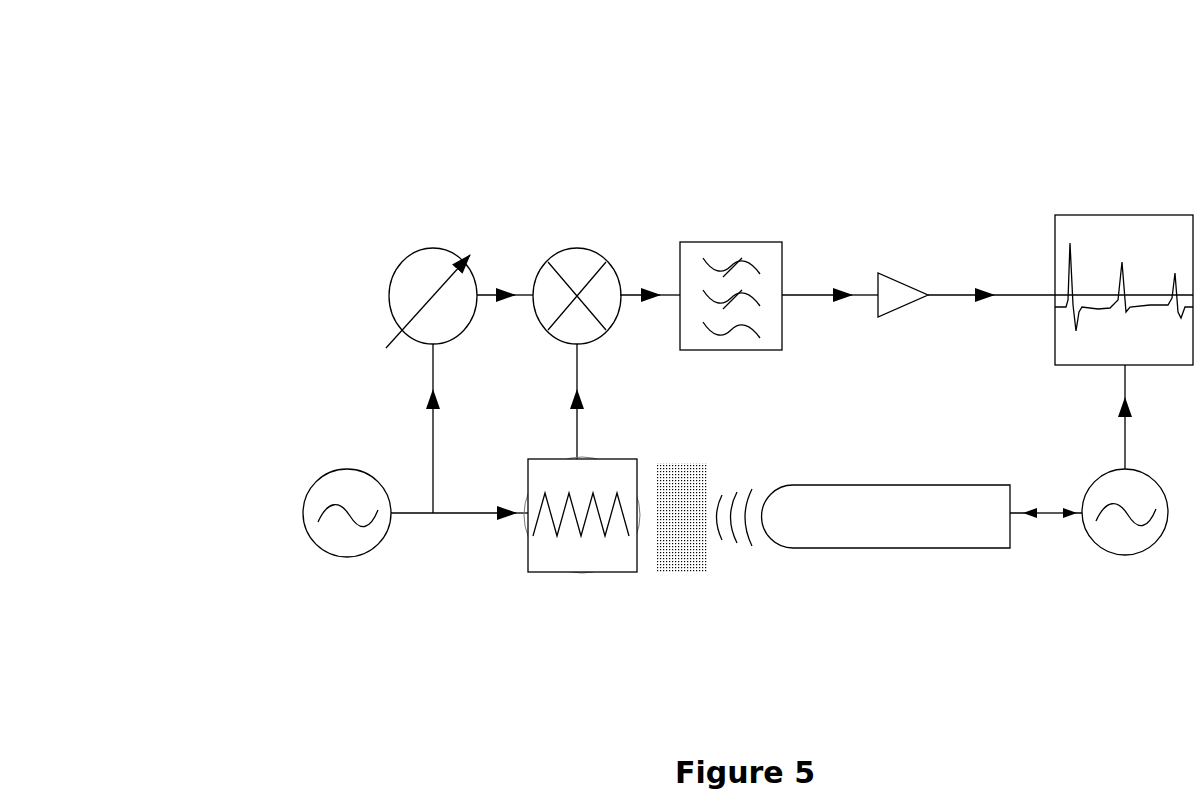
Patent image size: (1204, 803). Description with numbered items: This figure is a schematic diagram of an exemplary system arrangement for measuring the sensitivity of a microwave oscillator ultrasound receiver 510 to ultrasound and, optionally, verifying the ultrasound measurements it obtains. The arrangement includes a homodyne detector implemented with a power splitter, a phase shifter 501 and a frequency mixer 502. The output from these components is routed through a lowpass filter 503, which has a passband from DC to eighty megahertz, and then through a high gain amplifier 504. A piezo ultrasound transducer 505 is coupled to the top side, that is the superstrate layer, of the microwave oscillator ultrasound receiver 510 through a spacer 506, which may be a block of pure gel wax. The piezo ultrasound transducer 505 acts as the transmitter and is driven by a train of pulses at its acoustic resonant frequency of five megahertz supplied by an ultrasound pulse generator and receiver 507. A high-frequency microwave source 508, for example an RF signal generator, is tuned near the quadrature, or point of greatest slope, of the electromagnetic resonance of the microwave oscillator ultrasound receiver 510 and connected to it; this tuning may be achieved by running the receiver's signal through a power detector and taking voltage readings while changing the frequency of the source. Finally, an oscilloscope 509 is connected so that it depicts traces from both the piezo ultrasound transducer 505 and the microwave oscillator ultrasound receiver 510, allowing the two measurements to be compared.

The phase shifter 501 is at (457, 202).
The frequency mixer 502 is at (587, 206).
The lowpass filter 503 is at (724, 208).
The high gain amplifier 504 is at (905, 266).
The piezo ultrasound transducer 505 is at (871, 566).
The spacer 506 is at (677, 590).
The ultrasound pulse generator and receiver 507 is at (1087, 630).
The high-frequency microwave source 508 is at (288, 510).
The oscilloscope 509 is at (1119, 164).
The microwave oscillator ultrasound receiver 510 is at (587, 618).